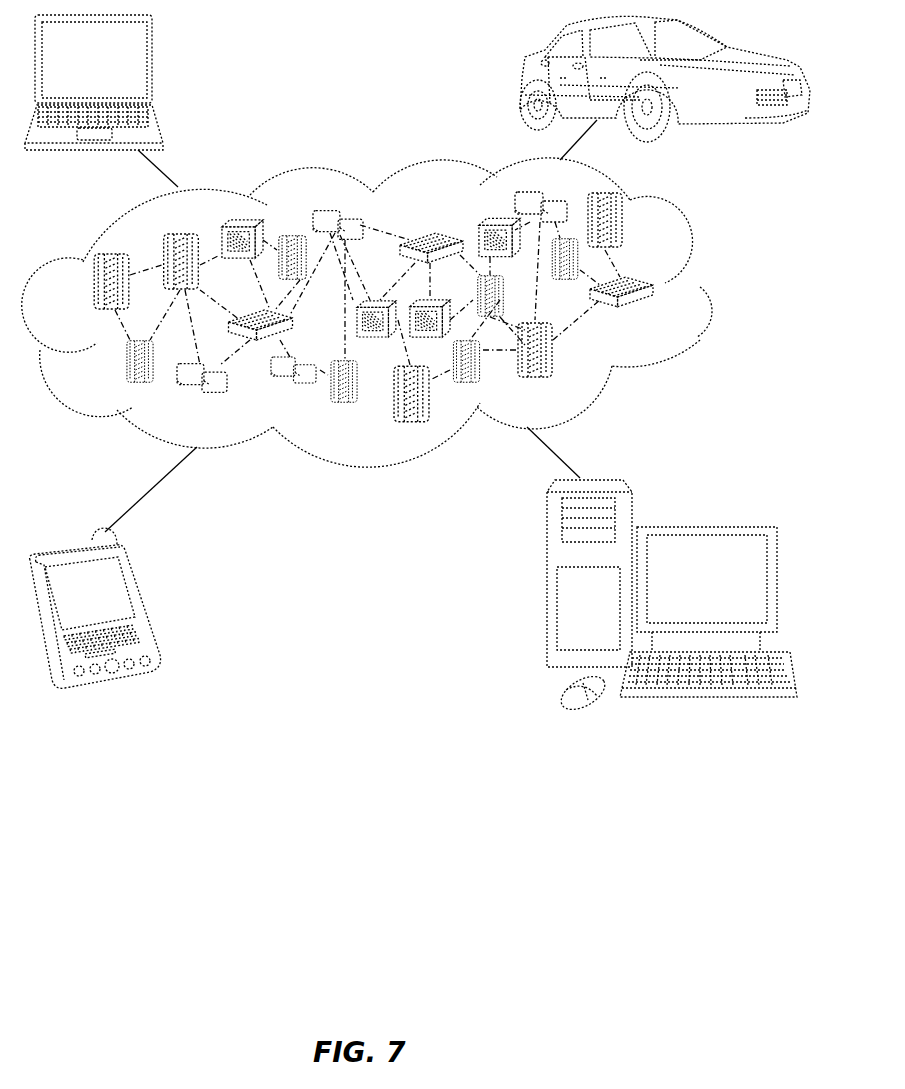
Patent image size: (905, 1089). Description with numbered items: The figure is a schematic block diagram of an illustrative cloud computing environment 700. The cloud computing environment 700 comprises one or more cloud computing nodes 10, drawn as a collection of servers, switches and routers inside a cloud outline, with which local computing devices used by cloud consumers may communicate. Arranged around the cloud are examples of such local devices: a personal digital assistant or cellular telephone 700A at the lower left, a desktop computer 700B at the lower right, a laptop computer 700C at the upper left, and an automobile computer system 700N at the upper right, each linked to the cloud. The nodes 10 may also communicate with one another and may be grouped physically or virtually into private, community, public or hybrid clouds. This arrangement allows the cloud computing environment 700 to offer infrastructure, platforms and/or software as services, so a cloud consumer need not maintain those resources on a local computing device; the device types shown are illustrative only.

The laptop computer 700C is at (152, 67).
The automobile computer system 700N is at (520, 80).
The cloud computing environment 700 is at (703, 290).
The cloud computing nodes 10 is at (655, 315).
The personal digital assistant (PDA) or cellular telephone 700A is at (145, 605).
The desktop computer 700B is at (703, 525).